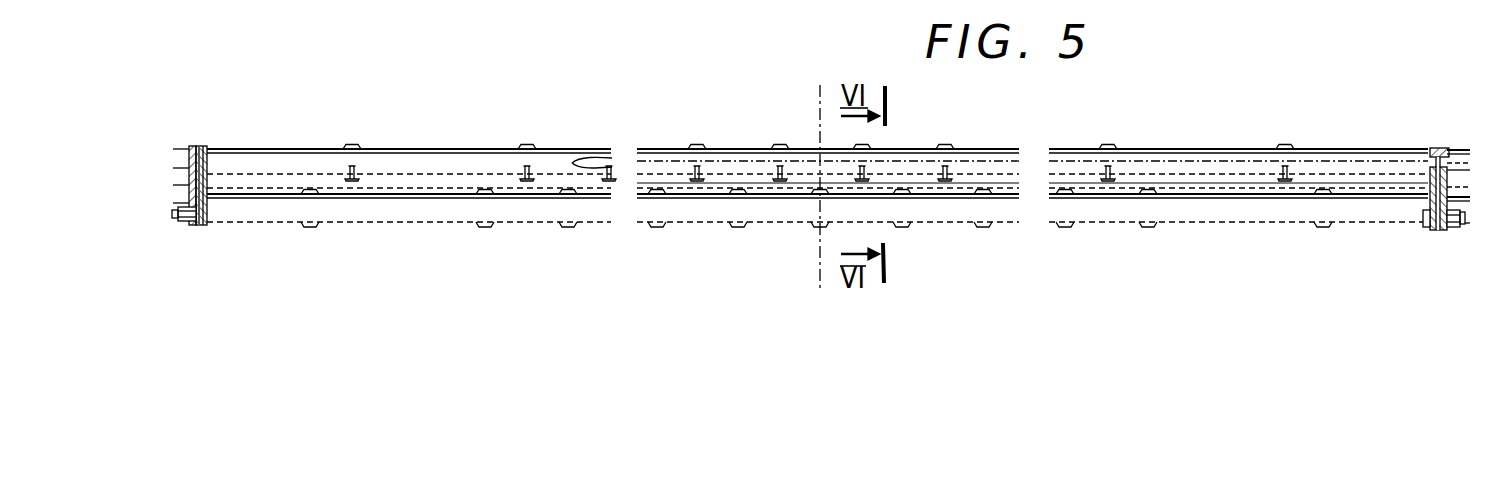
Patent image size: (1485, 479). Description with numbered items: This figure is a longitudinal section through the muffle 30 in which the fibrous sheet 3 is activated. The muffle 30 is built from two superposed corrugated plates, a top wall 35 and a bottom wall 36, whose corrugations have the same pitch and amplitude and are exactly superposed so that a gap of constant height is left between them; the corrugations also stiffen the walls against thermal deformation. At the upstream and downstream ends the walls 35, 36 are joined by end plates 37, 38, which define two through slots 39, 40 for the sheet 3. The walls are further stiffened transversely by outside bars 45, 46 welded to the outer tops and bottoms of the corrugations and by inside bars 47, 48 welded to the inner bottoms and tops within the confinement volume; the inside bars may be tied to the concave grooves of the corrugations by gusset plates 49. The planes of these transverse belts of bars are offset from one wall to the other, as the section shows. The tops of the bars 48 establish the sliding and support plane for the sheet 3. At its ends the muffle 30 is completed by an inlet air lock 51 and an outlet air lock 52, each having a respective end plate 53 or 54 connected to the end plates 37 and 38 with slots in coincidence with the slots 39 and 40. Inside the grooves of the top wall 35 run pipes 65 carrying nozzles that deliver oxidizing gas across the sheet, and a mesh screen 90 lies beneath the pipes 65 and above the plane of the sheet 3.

The sheet 3 is at (528, 190).
The muffle 30 is at (571, 148).
The top wall 35 is at (395, 150).
The bottom wall 36 is at (437, 198).
The upstream end plate 37 is at (202, 146).
The downstream end plate 38 is at (1432, 230).
The upstream through slot 39 is at (208, 187).
The downstream through slot 40 is at (1430, 187).
The outside bar 45 is at (705, 147).
The outside bar 46 is at (1146, 230).
The inside bar 47 is at (698, 183).
The inside bar 48 is at (1147, 192).
The gusset plate 49 is at (526, 168).
The inlet air lock 51 is at (165, 222).
The outlet air lock 52 is at (1468, 144).
The inlet air lock end plate 53 is at (193, 147).
The outlet air lock end plate 54 is at (1444, 148).
The pipe 65 is at (590, 160).
The screen 90 is at (1223, 190).